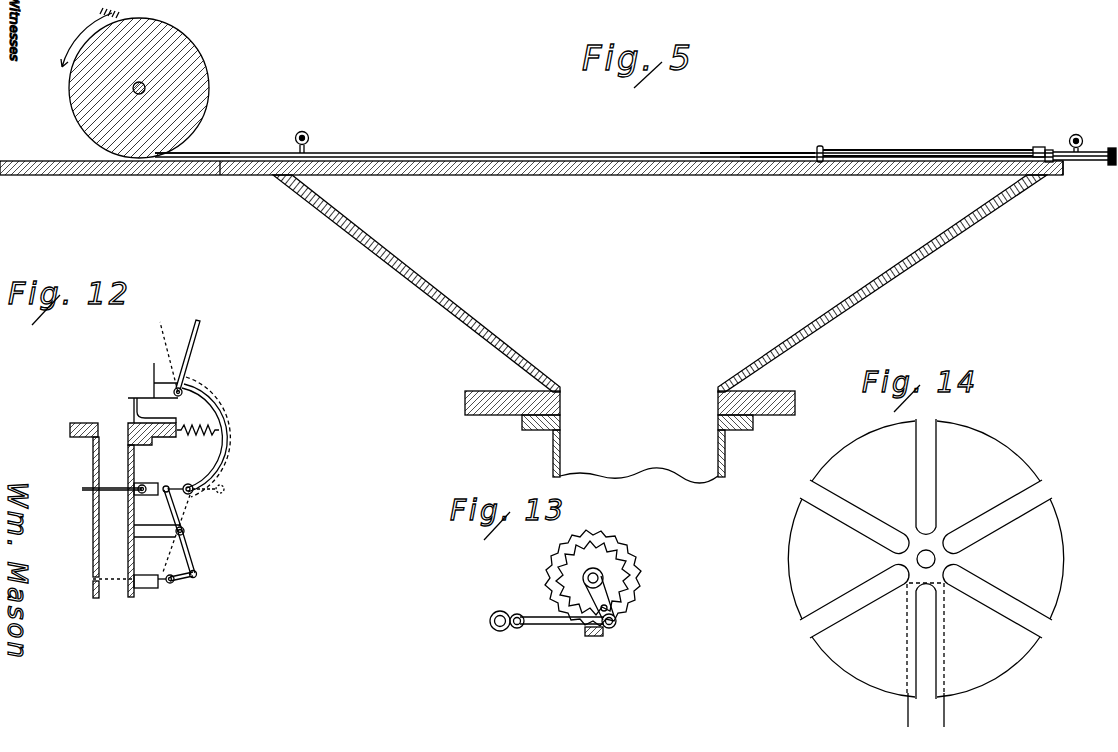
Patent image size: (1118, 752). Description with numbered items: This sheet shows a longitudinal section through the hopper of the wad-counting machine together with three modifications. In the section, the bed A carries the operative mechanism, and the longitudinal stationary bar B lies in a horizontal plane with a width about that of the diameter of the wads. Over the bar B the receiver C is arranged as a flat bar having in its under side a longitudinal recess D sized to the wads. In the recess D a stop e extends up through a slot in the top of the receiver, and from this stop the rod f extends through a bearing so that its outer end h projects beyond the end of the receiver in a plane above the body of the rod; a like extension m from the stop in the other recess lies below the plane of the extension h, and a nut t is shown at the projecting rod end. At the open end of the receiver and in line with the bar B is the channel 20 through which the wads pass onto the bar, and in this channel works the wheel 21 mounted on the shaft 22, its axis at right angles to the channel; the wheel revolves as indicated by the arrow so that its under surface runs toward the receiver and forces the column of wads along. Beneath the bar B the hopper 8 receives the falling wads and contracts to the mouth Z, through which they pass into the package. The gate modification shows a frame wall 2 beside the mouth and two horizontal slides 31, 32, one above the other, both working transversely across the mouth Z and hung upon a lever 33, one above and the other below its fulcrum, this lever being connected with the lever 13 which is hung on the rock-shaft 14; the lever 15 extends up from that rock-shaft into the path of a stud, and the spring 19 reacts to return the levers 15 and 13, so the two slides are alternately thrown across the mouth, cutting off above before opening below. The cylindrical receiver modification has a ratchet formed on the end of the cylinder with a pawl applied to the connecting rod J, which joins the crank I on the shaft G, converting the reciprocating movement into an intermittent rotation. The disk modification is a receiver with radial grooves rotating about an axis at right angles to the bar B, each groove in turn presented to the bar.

In FIG. 5, the wheel 21 is at (138, 83).
In FIG. 5, the shaft 22 is at (147, 90).
In FIG. 5, the channel 20 is at (222, 160).
In FIG. 5, the longitudinal stationary bar B is at (531, 178).
In FIG. 13, the longitudinal stationary bar B is at (594, 641).
In FIG. 14, the longitudinal stationary bar B is at (930, 722).
In FIG. 5, the hopper 8 is at (660, 283).
In FIG. 5, the bed A is at (630, 424).
In FIG. 12, the bed A is at (65, 443).
In FIG. 5, the mouth Z is at (639, 454).
In FIG. 5, the receiver C is at (757, 141).
In FIG. 5, the recess D is at (762, 158).
In FIG. 5, the stop e is at (818, 146).
In FIG. 5, the rod f is at (938, 148).
In FIG. 5, the outer end of rod h is at (1080, 147).
In FIG. 5, the nut t is at (1111, 149).
In FIG. 5, the extension m is at (1083, 171).
In FIG. 12, the frame wall 2 is at (142, 480).
In FIG. 12, the rock-shaft 14 is at (183, 389).
In FIG. 12, the lever 15 is at (184, 356).
In FIG. 12, the lever 13 is at (224, 425).
In FIG. 12, the spring 19 is at (205, 434).
In FIG. 12, the upper horizontal slide 31 is at (118, 482).
In FIG. 12, the lever 33 is at (171, 533).
In FIG. 12, the lower horizontal slide 32 is at (146, 588).
In FIG. 13, the crank I is at (512, 612).
In FIG. 13, the longitudinal shaft G is at (492, 615).
In FIG. 13, the rod J is at (562, 632).